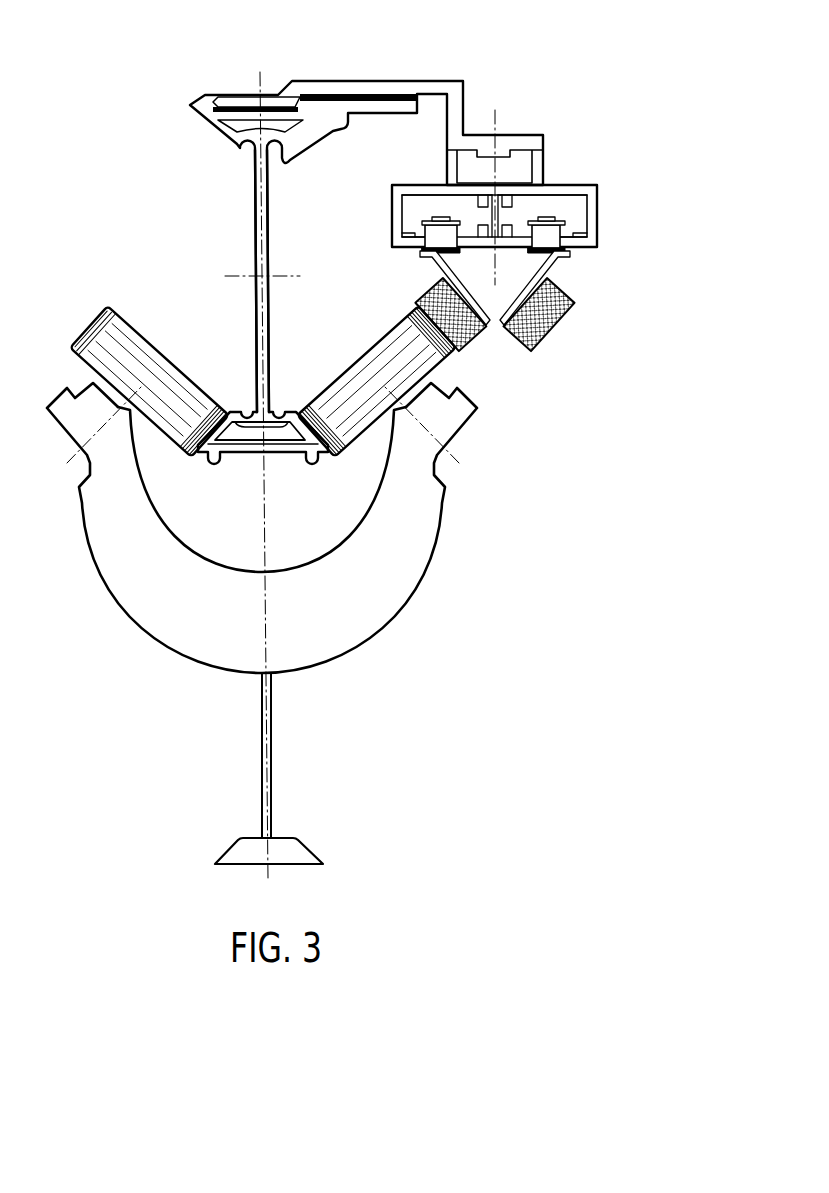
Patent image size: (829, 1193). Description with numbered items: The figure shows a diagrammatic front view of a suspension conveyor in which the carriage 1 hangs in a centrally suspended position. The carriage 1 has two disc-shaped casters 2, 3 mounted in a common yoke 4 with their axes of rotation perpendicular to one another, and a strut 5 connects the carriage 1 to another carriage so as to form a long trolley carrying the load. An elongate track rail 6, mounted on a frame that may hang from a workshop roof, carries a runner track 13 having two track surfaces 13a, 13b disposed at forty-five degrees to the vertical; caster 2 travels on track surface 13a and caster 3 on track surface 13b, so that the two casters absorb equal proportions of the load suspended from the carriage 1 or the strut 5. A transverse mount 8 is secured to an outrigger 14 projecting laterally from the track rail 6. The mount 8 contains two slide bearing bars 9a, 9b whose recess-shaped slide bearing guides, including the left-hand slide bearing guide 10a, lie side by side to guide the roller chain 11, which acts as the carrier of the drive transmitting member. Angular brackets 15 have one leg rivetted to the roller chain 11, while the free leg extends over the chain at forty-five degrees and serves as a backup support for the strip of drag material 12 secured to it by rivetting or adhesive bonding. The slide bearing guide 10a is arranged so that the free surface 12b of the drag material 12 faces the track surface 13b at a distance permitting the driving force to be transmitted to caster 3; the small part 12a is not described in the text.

The carriage 1 is at (207, 669).
The caster 2 is at (118, 350).
The caster 3 is at (393, 373).
The yoke 4 is at (187, 595).
The strut 5 is at (307, 850).
The track rail 6 is at (257, 217).
The transverse mount 8 is at (543, 188).
The slide bearing bar 9a is at (440, 205).
The slide bearing bar 9b is at (573, 212).
The slide bearing guide 10a is at (433, 218).
The roller chain 11 is at (548, 236).
The strip of drag material 12 is at (472, 338).
The spring band 12a is at (422, 253).
The free surface of drag material 12b is at (452, 347).
The runner track 13 is at (206, 456).
The track surface 13a is at (224, 408).
The track surface 13b is at (296, 408).
The outrigger 14 is at (360, 104).
The angular bracket 15 is at (560, 272).